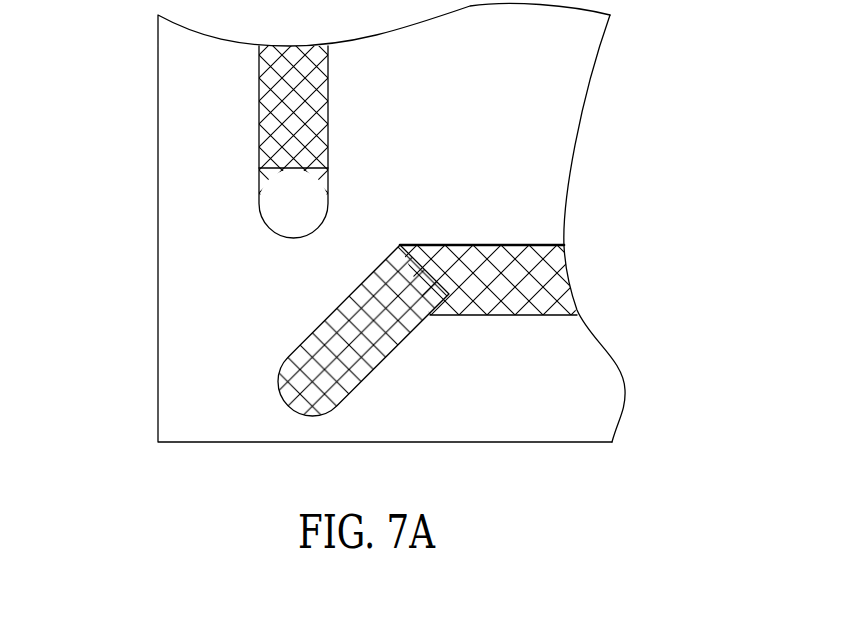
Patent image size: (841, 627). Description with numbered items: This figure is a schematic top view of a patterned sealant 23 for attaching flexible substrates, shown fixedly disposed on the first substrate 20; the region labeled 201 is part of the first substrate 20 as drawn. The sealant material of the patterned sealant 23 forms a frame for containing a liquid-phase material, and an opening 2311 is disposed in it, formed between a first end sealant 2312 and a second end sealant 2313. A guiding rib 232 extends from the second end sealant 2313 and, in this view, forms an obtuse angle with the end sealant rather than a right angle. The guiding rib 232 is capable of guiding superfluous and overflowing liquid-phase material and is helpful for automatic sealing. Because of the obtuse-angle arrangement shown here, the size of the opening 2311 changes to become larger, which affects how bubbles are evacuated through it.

The first substrate 20 is at (157, 367).
The side surface of body 201 is at (547, 128).
The patterned sealant 23 is at (285, 106).
The opening 2311 is at (368, 236).
The first end sealant 2312 is at (283, 203).
The second end sealant 2313 is at (473, 258).
The guiding rib 232 is at (310, 345).